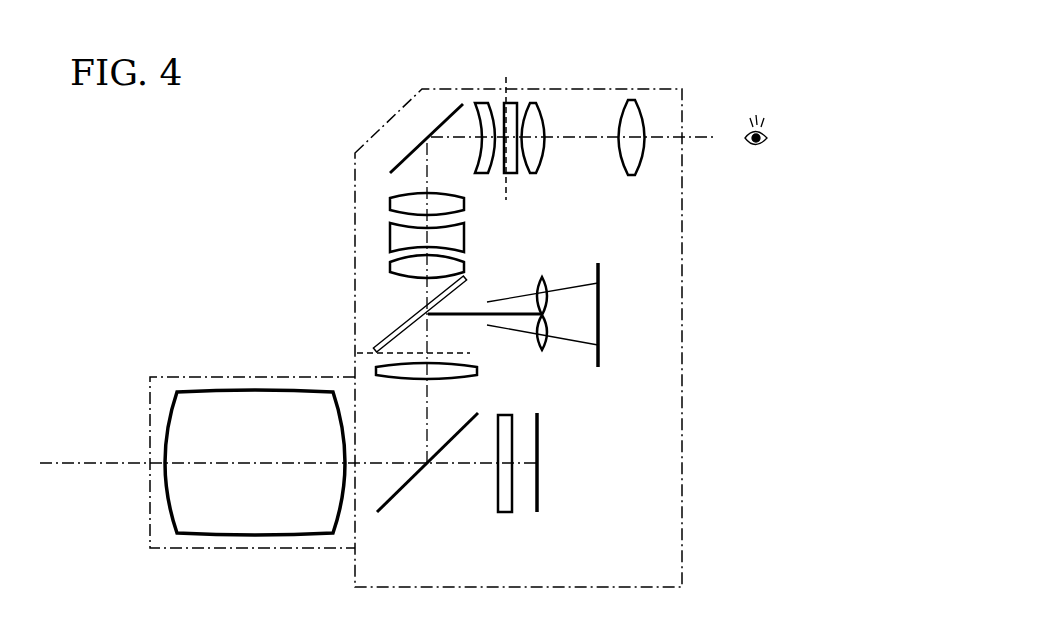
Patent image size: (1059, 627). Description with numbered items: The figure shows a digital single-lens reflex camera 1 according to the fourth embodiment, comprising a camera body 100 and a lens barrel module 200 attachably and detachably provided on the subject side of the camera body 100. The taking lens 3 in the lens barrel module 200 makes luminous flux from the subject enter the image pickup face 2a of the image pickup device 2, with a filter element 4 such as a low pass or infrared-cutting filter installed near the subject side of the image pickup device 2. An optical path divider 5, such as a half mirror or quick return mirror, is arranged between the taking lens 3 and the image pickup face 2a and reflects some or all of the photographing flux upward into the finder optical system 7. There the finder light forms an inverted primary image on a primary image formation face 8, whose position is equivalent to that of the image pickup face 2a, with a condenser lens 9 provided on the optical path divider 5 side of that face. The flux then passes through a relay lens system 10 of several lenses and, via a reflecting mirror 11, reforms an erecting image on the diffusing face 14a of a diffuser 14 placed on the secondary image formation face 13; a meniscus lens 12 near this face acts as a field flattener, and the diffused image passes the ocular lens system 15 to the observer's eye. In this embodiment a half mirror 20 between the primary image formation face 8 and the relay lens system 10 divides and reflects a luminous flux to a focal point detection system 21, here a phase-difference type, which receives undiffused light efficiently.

The single-lens reflex camera 1 is at (160, 269).
The image pickup device 2 is at (537, 414).
The image pickup face 2a is at (537, 493).
The taking lens 3 is at (225, 392).
The filter element 4 is at (507, 512).
The optical path divider 5 is at (385, 495).
The finder optical system 7 is at (378, 303).
The primary image formation face 8 is at (476, 350).
The condenser lens 9 is at (453, 380).
The relay lens system 10 is at (373, 193).
The reflecting mirror 11 is at (403, 155).
The meniscus lens 12 is at (476, 117).
The secondary image formation face 13 is at (505, 77).
The diffuser 14 is at (520, 107).
The diffusing face 14a is at (497, 112).
The ocular lens system 15 is at (642, 117).
The half mirror 20 is at (388, 330).
The focal point detection system 21 is at (483, 266).
The camera body 100 is at (682, 308).
The lens barrel module 200 is at (150, 408).